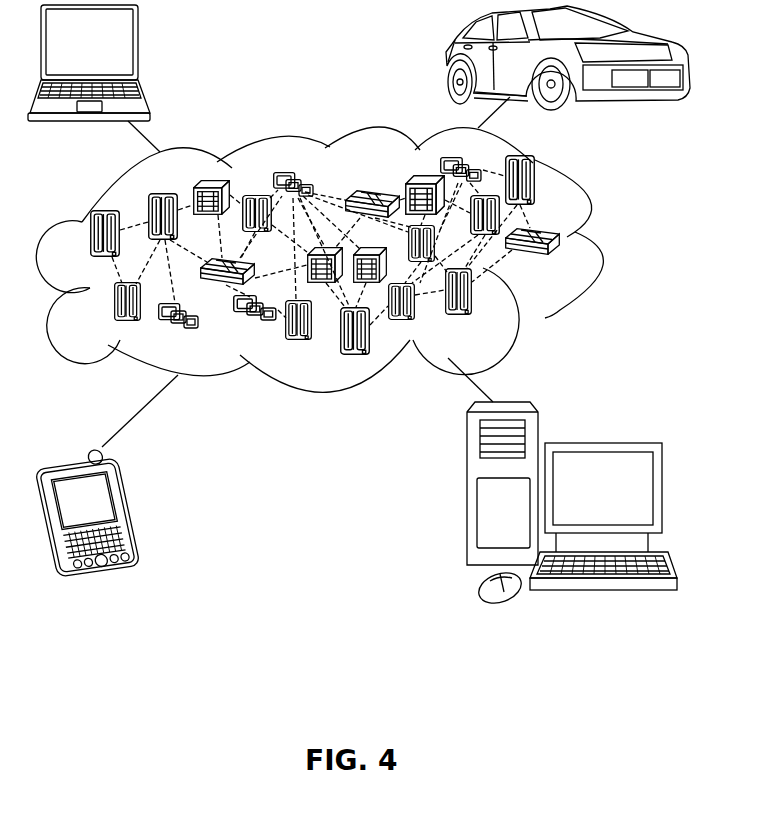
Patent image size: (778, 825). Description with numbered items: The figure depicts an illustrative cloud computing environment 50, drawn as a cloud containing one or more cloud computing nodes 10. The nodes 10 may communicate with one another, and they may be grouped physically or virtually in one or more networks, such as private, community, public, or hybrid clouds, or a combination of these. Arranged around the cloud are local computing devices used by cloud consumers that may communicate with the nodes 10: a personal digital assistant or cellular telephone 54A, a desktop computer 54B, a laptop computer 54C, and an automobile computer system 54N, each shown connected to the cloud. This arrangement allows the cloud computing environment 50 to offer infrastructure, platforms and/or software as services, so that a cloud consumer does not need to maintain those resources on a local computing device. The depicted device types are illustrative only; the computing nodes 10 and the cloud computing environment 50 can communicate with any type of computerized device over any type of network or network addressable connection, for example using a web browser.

The cloud computing nodes 10 is at (362, 255).
The cloud computing environment 50 is at (604, 241).
The personal digital assistant or cellular telephone 54A is at (133, 512).
The desktop computer 54B is at (599, 443).
The laptop computer 54C is at (140, 50).
The automobile computer system 54N is at (443, 58).